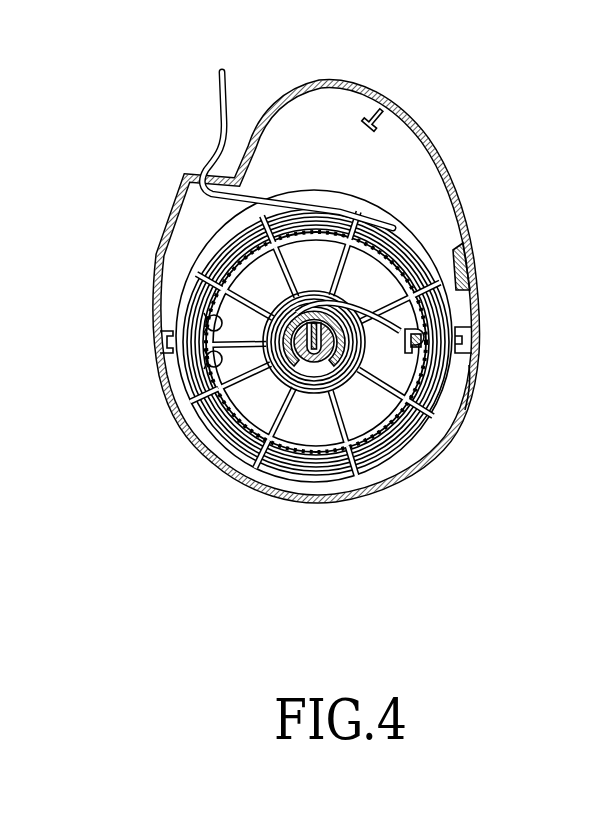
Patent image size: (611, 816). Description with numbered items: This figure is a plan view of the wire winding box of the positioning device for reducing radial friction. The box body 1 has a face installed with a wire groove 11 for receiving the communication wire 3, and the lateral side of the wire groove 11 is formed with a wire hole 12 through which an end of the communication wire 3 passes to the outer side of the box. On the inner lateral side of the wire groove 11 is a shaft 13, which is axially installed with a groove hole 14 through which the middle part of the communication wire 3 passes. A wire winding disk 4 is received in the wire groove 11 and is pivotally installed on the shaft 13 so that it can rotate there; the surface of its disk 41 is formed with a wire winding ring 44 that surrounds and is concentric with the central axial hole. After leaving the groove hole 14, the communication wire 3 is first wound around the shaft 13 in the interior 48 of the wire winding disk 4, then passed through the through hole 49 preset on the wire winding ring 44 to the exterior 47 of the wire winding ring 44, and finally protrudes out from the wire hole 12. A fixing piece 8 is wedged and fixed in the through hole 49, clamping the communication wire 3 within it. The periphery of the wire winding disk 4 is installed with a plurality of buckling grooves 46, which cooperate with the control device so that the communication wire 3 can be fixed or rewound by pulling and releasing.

The box body 1 is at (460, 180).
The communication wire 3 is at (188, 300).
The wire winding disk 4 is at (420, 430).
The fixing piece 8 is at (422, 335).
The wire groove 11 is at (403, 160).
The wire hole 12 is at (198, 170).
The shaft 13 is at (313, 368).
The groove hole 14 is at (328, 367).
The disk 41 is at (455, 377).
The wire winding ring 44 is at (206, 366).
The buckling groove 46 is at (162, 342).
The exterior of the wire winding ring 47 is at (242, 458).
The interior of the wire winding disk 48 is at (250, 433).
The through hole 49 is at (457, 338).